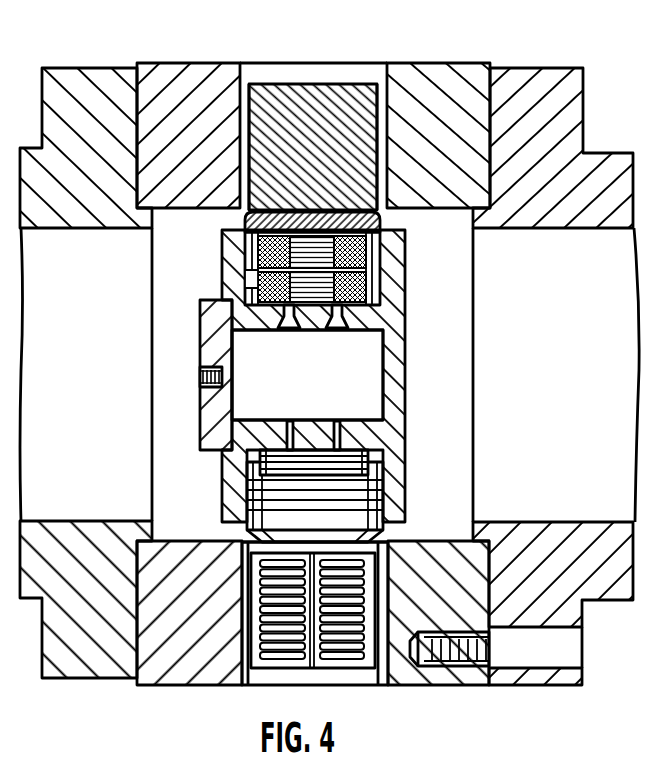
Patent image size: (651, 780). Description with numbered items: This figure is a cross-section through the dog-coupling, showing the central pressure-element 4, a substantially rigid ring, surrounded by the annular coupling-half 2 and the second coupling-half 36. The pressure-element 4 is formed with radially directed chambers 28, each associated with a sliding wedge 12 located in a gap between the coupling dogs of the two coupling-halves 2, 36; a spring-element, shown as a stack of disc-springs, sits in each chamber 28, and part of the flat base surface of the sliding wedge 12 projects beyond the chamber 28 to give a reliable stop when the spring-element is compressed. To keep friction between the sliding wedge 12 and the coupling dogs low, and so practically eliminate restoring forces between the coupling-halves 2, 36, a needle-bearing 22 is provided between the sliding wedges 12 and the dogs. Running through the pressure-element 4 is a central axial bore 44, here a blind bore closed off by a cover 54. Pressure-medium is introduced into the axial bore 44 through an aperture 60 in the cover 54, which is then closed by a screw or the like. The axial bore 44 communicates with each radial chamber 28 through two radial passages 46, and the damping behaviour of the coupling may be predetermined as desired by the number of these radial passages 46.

The coupling-half 2 is at (508, 88).
The pressure-element 4 is at (394, 293).
The sliding wedge 12 is at (338, 92).
The needle-bearing 22 is at (348, 635).
The radial chamber 28 is at (378, 498).
The second coupling-half 36 is at (100, 80).
The central axial bore 44 is at (358, 410).
The radial passage 46 is at (286, 330).
The cover 54 is at (208, 330).
The aperture 60 is at (203, 380).